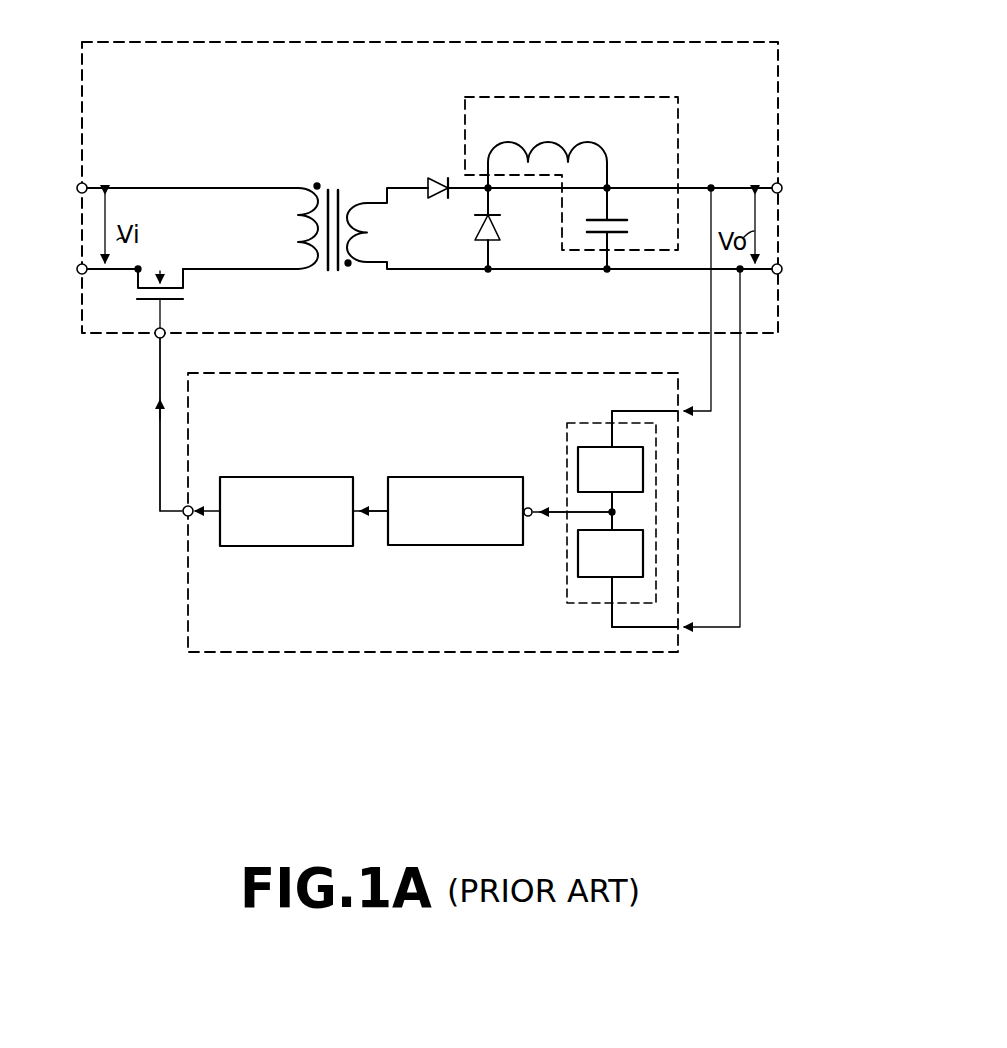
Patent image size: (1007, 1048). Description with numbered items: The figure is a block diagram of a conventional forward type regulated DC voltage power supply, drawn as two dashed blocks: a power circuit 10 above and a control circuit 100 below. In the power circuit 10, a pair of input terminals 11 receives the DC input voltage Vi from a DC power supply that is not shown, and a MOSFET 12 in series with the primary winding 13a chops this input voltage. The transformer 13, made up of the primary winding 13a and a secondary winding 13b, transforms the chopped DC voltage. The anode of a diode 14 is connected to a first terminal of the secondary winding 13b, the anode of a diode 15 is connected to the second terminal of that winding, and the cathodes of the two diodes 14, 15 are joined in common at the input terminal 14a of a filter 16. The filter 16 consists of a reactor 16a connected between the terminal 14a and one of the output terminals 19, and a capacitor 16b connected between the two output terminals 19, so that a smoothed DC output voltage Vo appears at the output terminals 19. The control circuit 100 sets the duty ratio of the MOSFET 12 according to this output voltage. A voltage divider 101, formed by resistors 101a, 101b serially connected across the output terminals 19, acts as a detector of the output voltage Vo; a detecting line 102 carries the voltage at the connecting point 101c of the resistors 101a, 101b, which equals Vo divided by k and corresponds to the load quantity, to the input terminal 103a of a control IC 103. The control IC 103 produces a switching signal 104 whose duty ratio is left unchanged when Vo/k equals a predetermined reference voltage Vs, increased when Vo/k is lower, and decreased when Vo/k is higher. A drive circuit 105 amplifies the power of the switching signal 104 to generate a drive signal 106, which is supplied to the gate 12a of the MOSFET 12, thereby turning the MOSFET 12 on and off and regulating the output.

The power circuit 10 is at (416, 42).
The input terminals 11 is at (79, 184).
The MOSFET 12 is at (137, 296).
The gate 12a is at (157, 340).
The transformer 13 is at (326, 184).
The primary winding 13a is at (299, 188).
The secondary winding 13b is at (368, 203).
The diode 14 is at (430, 177).
The input terminal of the filter 14a is at (490, 190).
The diode 15 is at (476, 231).
The filter 16 is at (571, 166).
The reactor 16a is at (547, 152).
The capacitor 16b is at (612, 225).
The output terminals 19 is at (782, 186).
The control circuit 100 is at (552, 373).
The voltage divider 101 is at (626, 511).
The resistor 101a is at (581, 445).
The resistor 101b is at (594, 576).
The connecting point 101c is at (612, 512).
The detecting line 102 is at (553, 508).
The control IC 103 is at (473, 507).
The input terminal of the control IC 103a is at (532, 518).
The switching signal 104 is at (366, 523).
The drive circuit 105 is at (273, 477).
The drive signal 106 is at (159, 432).